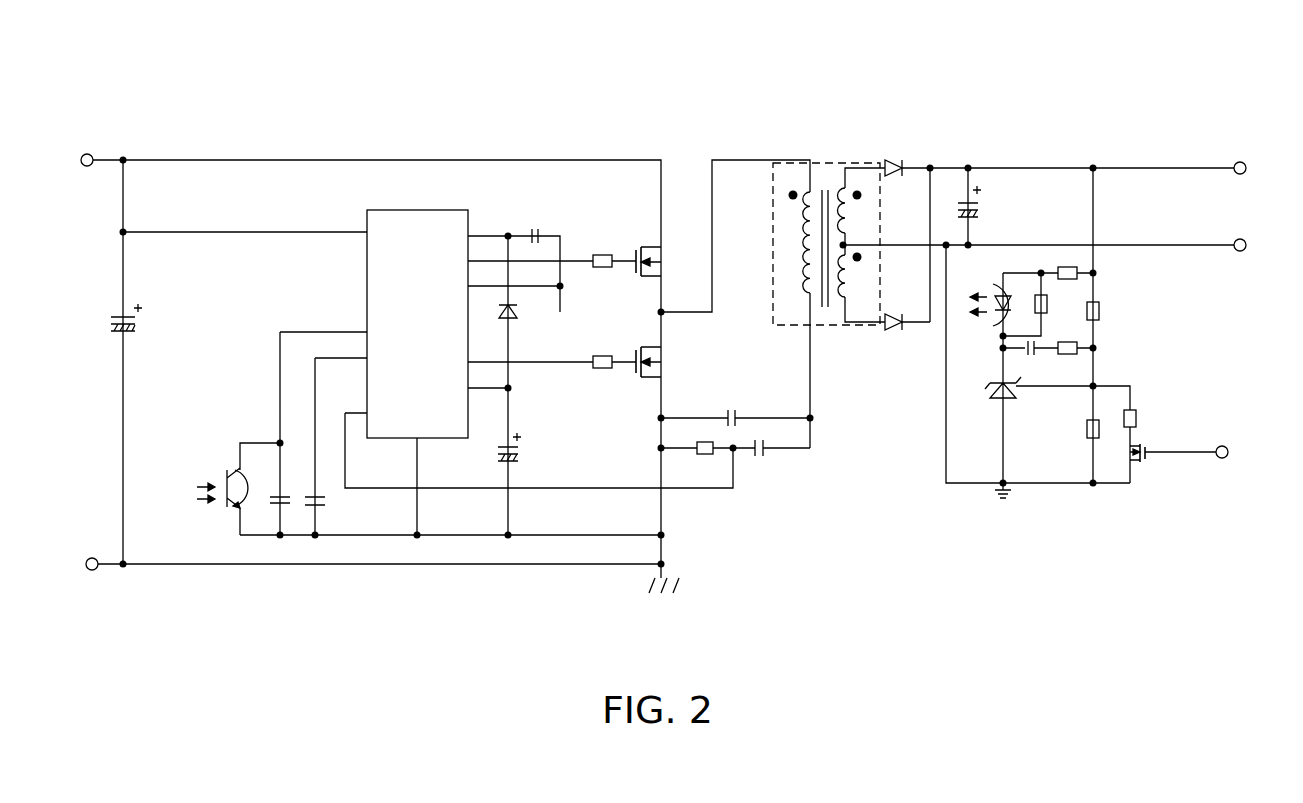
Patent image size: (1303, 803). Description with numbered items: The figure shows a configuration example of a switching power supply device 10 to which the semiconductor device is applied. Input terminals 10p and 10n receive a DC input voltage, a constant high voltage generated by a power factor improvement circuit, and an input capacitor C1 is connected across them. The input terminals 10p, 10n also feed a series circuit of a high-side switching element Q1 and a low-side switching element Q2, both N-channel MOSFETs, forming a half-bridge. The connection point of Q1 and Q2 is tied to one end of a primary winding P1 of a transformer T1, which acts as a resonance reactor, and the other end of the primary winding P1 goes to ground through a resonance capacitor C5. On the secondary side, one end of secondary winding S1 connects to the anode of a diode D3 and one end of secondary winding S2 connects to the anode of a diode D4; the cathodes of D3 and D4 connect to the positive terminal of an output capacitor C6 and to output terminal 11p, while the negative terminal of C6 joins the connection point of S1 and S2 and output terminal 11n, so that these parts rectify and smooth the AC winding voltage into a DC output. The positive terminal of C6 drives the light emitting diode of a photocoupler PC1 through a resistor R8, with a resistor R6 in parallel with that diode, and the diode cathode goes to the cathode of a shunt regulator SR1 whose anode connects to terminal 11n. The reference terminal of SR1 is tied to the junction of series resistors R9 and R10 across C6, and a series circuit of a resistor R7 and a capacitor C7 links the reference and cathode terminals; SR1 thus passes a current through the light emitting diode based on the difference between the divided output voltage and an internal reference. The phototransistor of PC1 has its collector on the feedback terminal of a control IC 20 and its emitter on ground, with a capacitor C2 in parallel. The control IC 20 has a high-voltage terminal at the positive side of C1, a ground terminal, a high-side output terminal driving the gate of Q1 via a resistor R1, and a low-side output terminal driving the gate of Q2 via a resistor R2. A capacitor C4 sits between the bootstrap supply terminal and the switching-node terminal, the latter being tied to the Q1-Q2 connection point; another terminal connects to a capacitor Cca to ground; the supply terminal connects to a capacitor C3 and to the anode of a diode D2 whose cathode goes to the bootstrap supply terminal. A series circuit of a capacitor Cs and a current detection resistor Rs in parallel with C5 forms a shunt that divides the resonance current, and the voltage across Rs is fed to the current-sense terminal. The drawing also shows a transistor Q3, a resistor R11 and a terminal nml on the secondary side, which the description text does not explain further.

The switching power supply device 10 is at (593, 75).
The input terminal 10p is at (88, 154).
The input terminal 10n is at (92, 558).
The output terminal 11p is at (1242, 162).
The output terminal 11n is at (1241, 239).
The control IC 20 is at (413, 210).
The input capacitor C1 is at (139, 319).
The capacitor C2 is at (287, 489).
The capacitor Cca is at (329, 511).
The capacitor C3 is at (524, 447).
The capacitor C4 is at (532, 226).
The resonance capacitor C5 is at (730, 409).
The output capacitor C6 is at (984, 201).
The capacitor C7 is at (1028, 364).
The capacitor Cs is at (770, 440).
The diode D2 is at (523, 312).
The diode D3 is at (891, 155).
The diode D4 is at (891, 332).
The high-side switching element Q1 is at (664, 261).
The low-side switching element Q2 is at (664, 362).
The transistor Q3 is at (1173, 447).
The resistor R1 is at (601, 251).
The resistor R2 is at (601, 351).
The current detection resistor Rs is at (701, 439).
The resistor R6 is at (1053, 305).
The resistor R7 is at (1066, 339).
The resistor R8 is at (1066, 264).
The resistor R9 is at (1105, 311).
The resistor R10 is at (1072, 430).
The resistor R11 is at (1147, 419).
The transformer T1 is at (826, 234).
The primary winding P1 is at (794, 242).
The secondary winding S1 is at (857, 212).
The secondary winding S2 is at (856, 279).
The photocoupler PC1 is at (600, 394).
The shunt regulator SR1 is at (990, 423).
The normal mode signal terminal nml is at (1240, 452).